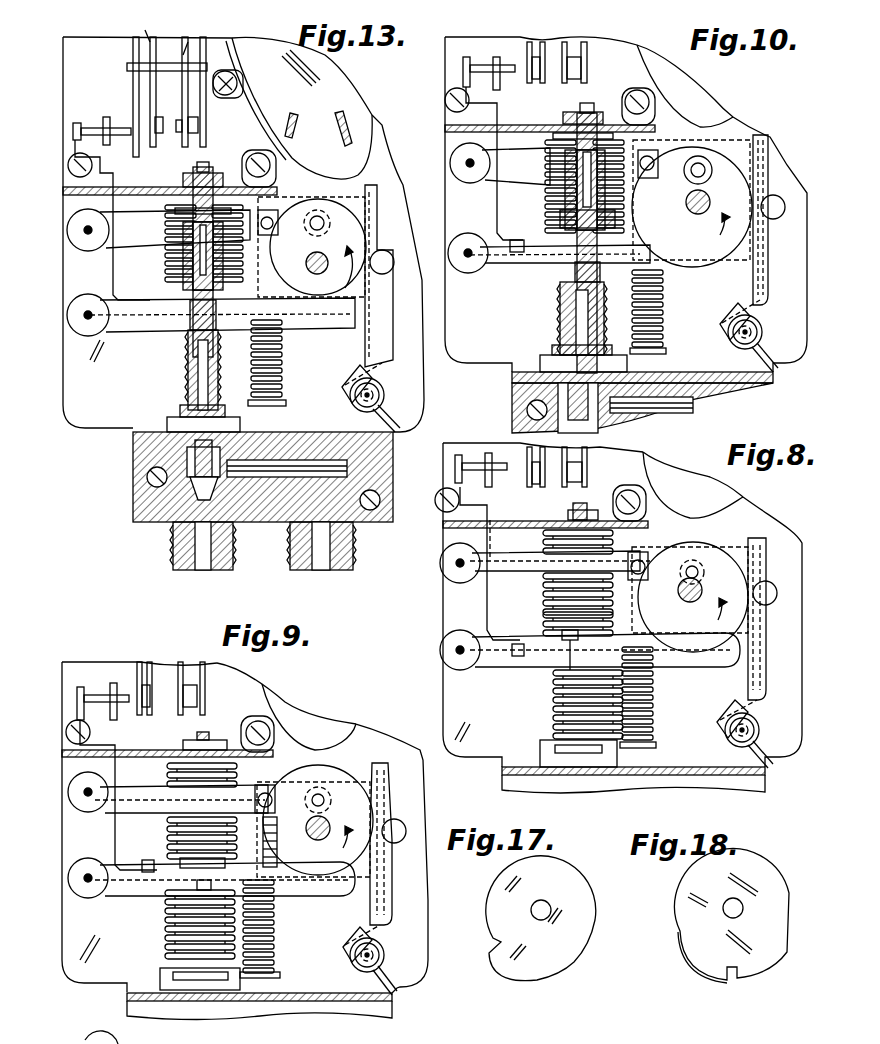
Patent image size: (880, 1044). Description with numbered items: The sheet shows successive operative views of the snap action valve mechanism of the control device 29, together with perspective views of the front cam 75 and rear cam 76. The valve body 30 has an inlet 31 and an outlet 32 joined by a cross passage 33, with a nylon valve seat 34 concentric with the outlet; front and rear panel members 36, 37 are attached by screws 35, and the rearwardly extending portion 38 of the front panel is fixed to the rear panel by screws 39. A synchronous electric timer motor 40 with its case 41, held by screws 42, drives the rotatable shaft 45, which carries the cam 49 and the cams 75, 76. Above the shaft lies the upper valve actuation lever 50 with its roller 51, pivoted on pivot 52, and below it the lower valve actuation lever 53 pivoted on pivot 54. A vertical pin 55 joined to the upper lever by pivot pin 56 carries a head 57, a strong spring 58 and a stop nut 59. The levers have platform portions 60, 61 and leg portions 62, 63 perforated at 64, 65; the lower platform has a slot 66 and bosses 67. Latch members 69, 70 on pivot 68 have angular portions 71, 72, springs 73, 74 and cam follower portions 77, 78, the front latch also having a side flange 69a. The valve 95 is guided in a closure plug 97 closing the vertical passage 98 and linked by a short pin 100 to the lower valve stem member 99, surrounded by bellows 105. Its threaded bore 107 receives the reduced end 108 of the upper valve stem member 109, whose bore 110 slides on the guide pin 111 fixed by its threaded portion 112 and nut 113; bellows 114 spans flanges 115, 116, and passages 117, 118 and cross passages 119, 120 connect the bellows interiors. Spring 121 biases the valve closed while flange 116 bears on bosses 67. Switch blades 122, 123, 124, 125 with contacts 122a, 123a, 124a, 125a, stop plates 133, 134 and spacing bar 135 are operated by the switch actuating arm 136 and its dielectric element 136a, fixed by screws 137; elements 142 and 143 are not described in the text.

In FIG. 13, the control device 29 is at (100, 515).
In FIG. 8, the control device 29 is at (430, 624).
In FIG. 13, the valve body 30 is at (143, 522).
In FIG. 10, the valve body 30 is at (740, 385).
In FIG. 13, the inlet 31 is at (322, 565).
In FIG. 13, the outlet 32 is at (205, 565).
In FIG. 10, the outlet 32 is at (585, 433).
In FIG. 13, the cross passage 33 is at (275, 478).
In FIG. 10, the cross passage 33 is at (660, 412).
In FIG. 13, the valve seat 34 is at (190, 490).
In FIG. 10, the valve seat 34 is at (560, 425).
In FIG. 13, the screws 35 is at (147, 478).
In FIG. 10, the screws 35 is at (527, 410).
In FIG. 8, the front panel member 36 is at (740, 786).
In FIG. 9, the front panel member 36 is at (330, 1010).
In FIG. 13, the rear panel member 37 is at (90, 412).
In FIG. 10, the rear panel member 37 is at (790, 355).
In FIG. 8, the rear panel member 37 is at (785, 752).
In FIG. 9, the rear panel member 37 is at (70, 665).
In FIG. 13, the rearwardly extending portion 38 is at (68, 195).
In FIG. 10, the rearwardly extending portion 38 is at (445, 128).
In FIG. 8, the rearwardly extending portion 38 is at (445, 526).
In FIG. 9, the rearwardly extending portion 38 is at (64, 753).
In FIG. 13, the screws 39 is at (68, 167).
In FIG. 10, the screws 39 is at (445, 100).
In FIG. 8, the screws 39 is at (443, 497).
In FIG. 9, the screws 39 is at (66, 730).
In FIG. 13, the synchronous electric timer motor 40 is at (330, 90).
In FIG. 13, the case 41 is at (360, 125).
In FIG. 10, the case 41 is at (660, 55).
In FIG. 8, the case 41 is at (700, 480).
In FIG. 9, the case 41 is at (300, 718).
In FIG. 13, the screws 42 is at (238, 78).
In FIG. 13, the rotatable shaft 45 is at (312, 270).
In FIG. 10, the rotatable shaft 45 is at (692, 192).
In FIG. 8, the rotatable shaft 45 is at (684, 580).
In FIG. 9, the rotatable shaft 45 is at (316, 842).
In FIG. 13, the cam 49 is at (330, 250).
In FIG. 10, the cam 49 is at (740, 185).
In FIG. 8, the cam 49 is at (712, 590).
In FIG. 9, the cam 49 is at (320, 840).
In FIG. 13, the upper valve actuation lever 50 is at (365, 172).
In FIG. 10, the upper valve actuation lever 50 is at (740, 96).
In FIG. 8, the upper valve actuation lever 50 is at (440, 620).
In FIG. 9, the upper valve actuation lever 50 is at (85, 815).
In FIG. 13, the roller 51 is at (310, 212).
In FIG. 10, the roller 51 is at (705, 160).
In FIG. 8, the roller 51 is at (700, 562).
In FIG. 9, the roller 51 is at (320, 787).
In FIG. 13, the pivot 52 is at (84, 232).
In FIG. 10, the pivot 52 is at (466, 164).
In FIG. 8, the pivot 52 is at (456, 564).
In FIG. 9, the pivot 52 is at (84, 793).
In FIG. 13, the lower valve actuation lever 53 is at (95, 338).
In FIG. 8, the lower valve actuation lever 53 is at (462, 675).
In FIG. 9, the lower valve actuation lever 53 is at (133, 900).
In FIG. 13, the pivot 54 is at (84, 316).
In FIG. 8, the pivot 54 is at (456, 651).
In FIG. 9, the pivot 54 is at (84, 879).
In FIG. 13, the vertical pin 55 is at (283, 335).
In FIG. 10, the vertical pin 55 is at (660, 340).
In FIG. 8, the vertical pin 55 is at (655, 700).
In FIG. 9, the vertical pin 55 is at (276, 947).
In FIG. 13, the pivot pin 56 is at (270, 218).
In FIG. 10, the pivot pin 56 is at (650, 157).
In FIG. 8, the pivot pin 56 is at (642, 560).
In FIG. 9, the pivot pin 56 is at (268, 793).
In FIG. 13, the head 57 is at (287, 402).
In FIG. 10, the head 57 is at (667, 350).
In FIG. 8, the head 57 is at (640, 750).
In FIG. 9, the head 57 is at (260, 975).
In FIG. 13, the spring 58 is at (283, 372).
In FIG. 10, the spring 58 is at (663, 292).
In FIG. 8, the spring 58 is at (655, 740).
In FIG. 9, the spring 58 is at (276, 965).
In FIG. 10, the stop nut 59 is at (650, 228).
In FIG. 8, the stop nut 59 is at (640, 640).
In FIG. 9, the stop nut 59 is at (270, 830).
In FIG. 13, the platform portion 60 is at (320, 197).
In FIG. 10, the platform portion 60 is at (688, 140).
In FIG. 8, the platform portion 60 is at (678, 547).
In FIG. 9, the platform portion 60 is at (293, 782).
In FIG. 13, the platform portion 61 is at (395, 245).
In FIG. 8, the platform portion 61 is at (700, 605).
In FIG. 13, the leg portions 62 is at (120, 240).
In FIG. 10, the leg portions 62 is at (490, 180).
In FIG. 8, the leg portions 62 is at (470, 575).
In FIG. 9, the leg portions 62 is at (108, 812).
In FIG. 13, the leg portions 63 is at (118, 340).
In FIG. 10, the leg portions 63 is at (485, 268).
In FIG. 9, the leg portions 63 is at (150, 898).
In FIG. 13, the perforation 64 is at (86, 233).
In FIG. 10, the perforation 64 is at (466, 160).
In FIG. 8, the perforation 64 is at (457, 568).
In FIG. 9, the perforation 64 is at (85, 790).
In FIG. 13, the perforation 65 is at (86, 318).
In FIG. 8, the perforation 65 is at (458, 654).
In FIG. 9, the perforation 65 is at (86, 882).
In FIG. 13, the longitudinal slot 66 is at (190, 330).
In FIG. 10, the longitudinal slot 66 is at (565, 285).
In FIG. 8, the bosses 67 is at (566, 645).
In FIG. 9, the bosses 67 is at (200, 890).
In FIG. 13, the pivot 68 is at (380, 395).
In FIG. 10, the pivot 68 is at (759, 334).
In FIG. 8, the pivot 68 is at (756, 729).
In FIG. 9, the pivot 68 is at (381, 955).
In FIG. 13, the front latch member 69 is at (394, 290).
In FIG. 10, the front latch member 69 is at (775, 230).
In FIG. 8, the front latch member 69 is at (768, 640).
In FIG. 9, the front latch member 69 is at (394, 860).
In FIG. 13, the side flange 69a is at (398, 205).
In FIG. 10, the side flange 69a is at (768, 155).
In FIG. 8, the side flange 69a is at (750, 540).
In FIG. 9, the side flange 69a is at (388, 778).
In FIG. 13, the rear latch member 70 is at (394, 355).
In FIG. 10, the rear latch member 70 is at (775, 255).
In FIG. 9, the rear latch member 70 is at (394, 880).
In FIG. 13, the angularly formed portion 71 is at (370, 200).
In FIG. 10, the angularly formed portion 71 is at (765, 145).
In FIG. 8, the angularly formed portion 71 is at (768, 542).
In FIG. 9, the angularly formed portion 71 is at (378, 763).
In FIG. 13, the angularly formed portion 72 is at (405, 285).
In FIG. 10, the angularly formed portion 72 is at (715, 258).
In FIG. 8, the angularly formed portion 72 is at (768, 605).
In FIG. 9, the angularly formed portion 72 is at (393, 905).
In FIG. 13, the spring 73 is at (362, 410).
In FIG. 10, the spring 73 is at (762, 316).
In FIG. 8, the spring 73 is at (760, 708).
In FIG. 9, the spring 73 is at (352, 970).
In FIG. 13, the spring 74 is at (362, 378).
In FIG. 10, the spring 74 is at (735, 345).
In FIG. 8, the spring 74 is at (735, 742).
In FIG. 9, the spring 74 is at (380, 940).
In FIG. 13, the front cam 75 is at (350, 290).
In FIG. 10, the front cam 75 is at (720, 150).
In FIG. 8, the front cam 75 is at (718, 640).
In FIG. 9, the front cam 75 is at (322, 875).
In FIG. 17, the front cam 75 is at (556, 952).
In FIG. 13, the rear cam 76 is at (392, 256).
In FIG. 10, the rear cam 76 is at (700, 270).
In FIG. 8, the rear cam 76 is at (772, 585).
In FIG. 9, the rear cam 76 is at (392, 818).
In FIG. 18, the rear cam 76 is at (722, 955).
In FIG. 13, the cam follower portion 77 is at (395, 266).
In FIG. 10, the cam follower portion 77 is at (782, 200).
In FIG. 8, the cam follower portion 77 is at (775, 595).
In FIG. 9, the cam follower portion 77 is at (406, 830).
In FIG. 13, the cam follower portion 78 is at (395, 262).
In FIG. 9, the cam follower portion 78 is at (396, 805).
In FIG. 13, the valve 95 is at (190, 462).
In FIG. 10, the valve 95 is at (560, 400).
In FIG. 13, the closure plug 97 is at (167, 424).
In FIG. 10, the closure plug 97 is at (628, 362).
In FIG. 8, the closure plug 97 is at (575, 767).
In FIG. 9, the closure plug 97 is at (198, 990).
In FIG. 13, the vertical passage 98 is at (220, 480).
In FIG. 10, the vertical passage 98 is at (610, 420).
In FIG. 13, the lower valve stem member 99 is at (200, 395).
In FIG. 10, the lower valve stem member 99 is at (590, 330).
In FIG. 13, the short pin 100 is at (180, 410).
In FIG. 10, the short pin 100 is at (553, 348).
In FIG. 13, the bellows 105 is at (199, 385).
In FIG. 10, the bellows 105 is at (577, 330).
In FIG. 8, the bellows 105 is at (555, 715).
In FIG. 9, the bellows 105 is at (172, 955).
In FIG. 13, the threaded longitudinal bore 107 is at (188, 360).
In FIG. 10, the threaded longitudinal bore 107 is at (562, 310).
In FIG. 13, the reduced threaded lower end 108 is at (192, 320).
In FIG. 10, the reduced threaded lower end 108 is at (575, 272).
In FIG. 10, the upper valve stem member 109 is at (565, 205).
In FIG. 10, the longitudinal bore 110 is at (616, 218).
In FIG. 10, the guide pin 111 is at (597, 116).
In FIG. 13, the threaded portion 112 is at (208, 165).
In FIG. 10, the threaded portion 112 is at (590, 104).
In FIG. 8, the threaded portion 112 is at (590, 505).
In FIG. 9, the threaded portion 112 is at (200, 732).
In FIG. 13, the nut 113 is at (195, 172).
In FIG. 10, the nut 113 is at (580, 112).
In FIG. 8, the nut 113 is at (540, 540).
In FIG. 9, the nut 113 is at (185, 745).
In FIG. 10, the bellows 114 is at (548, 160).
In FIG. 8, the bellows 114 is at (570, 548).
In FIG. 9, the bellows 114 is at (200, 778).
In FIG. 13, the flange 115 is at (222, 180).
In FIG. 10, the flange 115 is at (566, 114).
In FIG. 10, the flange 116 is at (565, 218).
In FIG. 10, the passage 117 is at (520, 264).
In FIG. 13, the passage 118 is at (183, 252).
In FIG. 10, the passage 118 is at (565, 190).
In FIG. 13, the cross passage 119 is at (232, 380).
In FIG. 10, the cross passage 119 is at (660, 318).
In FIG. 13, the cross passage 120 is at (176, 212).
In FIG. 10, the cross passage 120 is at (560, 137).
In FIG. 13, the spring 121 is at (170, 268).
In FIG. 10, the spring 121 is at (548, 225).
In FIG. 8, the spring 121 is at (545, 605).
In FIG. 9, the spring 121 is at (170, 775).
In FIG. 13, the switch blade 122 is at (133, 80).
In FIG. 10, the switch blade 122 is at (535, 85).
In FIG. 8, the switch blade 122 is at (545, 505).
In FIG. 9, the switch blade 122 is at (147, 705).
In FIG. 13, the contact 122a is at (145, 150).
In FIG. 9, the contact 122a is at (140, 690).
In FIG. 13, the switch blade 123 is at (165, 45).
In FIG. 10, the switch blade 123 is at (535, 42).
In FIG. 8, the switch blade 123 is at (538, 488).
In FIG. 9, the switch blade 123 is at (160, 665).
In FIG. 13, the contact 123a is at (155, 122).
In FIG. 9, the contact 123a is at (148, 685).
In FIG. 13, the switch blade 124 is at (190, 55).
In FIG. 10, the switch blade 124 is at (565, 42).
In FIG. 8, the switch blade 124 is at (570, 488).
In FIG. 9, the switch blade 124 is at (185, 665).
In FIG. 13, the contact 124a is at (198, 120).
In FIG. 9, the contact 124a is at (195, 708).
In FIG. 13, the switch blade 125 is at (208, 60).
In FIG. 10, the switch blade 125 is at (590, 65).
In FIG. 8, the switch blade 125 is at (590, 462).
In FIG. 9, the switch blade 125 is at (207, 683).
In FIG. 13, the contact 125a is at (200, 128).
In FIG. 10, the contact 125a is at (577, 55).
In FIG. 9, the contact 125a is at (203, 697).
In FIG. 13, the stop plate 133 is at (152, 40).
In FIG. 13, the stop plate 134 is at (185, 48).
In FIG. 13, the spacing bar 135 is at (135, 62).
In FIG. 13, the switch actuating arm 136 is at (112, 273).
In FIG. 10, the switch actuating arm 136 is at (466, 130).
In FIG. 8, the switch actuating arm 136 is at (487, 612).
In FIG. 9, the switch actuating arm 136 is at (113, 848).
In FIG. 13, the contacting element 136a is at (100, 125).
In FIG. 10, the contacting element 136a is at (500, 60).
In FIG. 8, the contacting element 136a is at (500, 475).
In FIG. 9, the contacting element 136a is at (120, 680).
In FIG. 10, the screws 137 is at (515, 255).
In FIG. 8, the screws 137 is at (515, 660).
In FIG. 9, the screws 137 is at (148, 860).
In FIG. 13, the leg 142 is at (294, 113).
In FIG. 13, the leg 143 is at (343, 113).